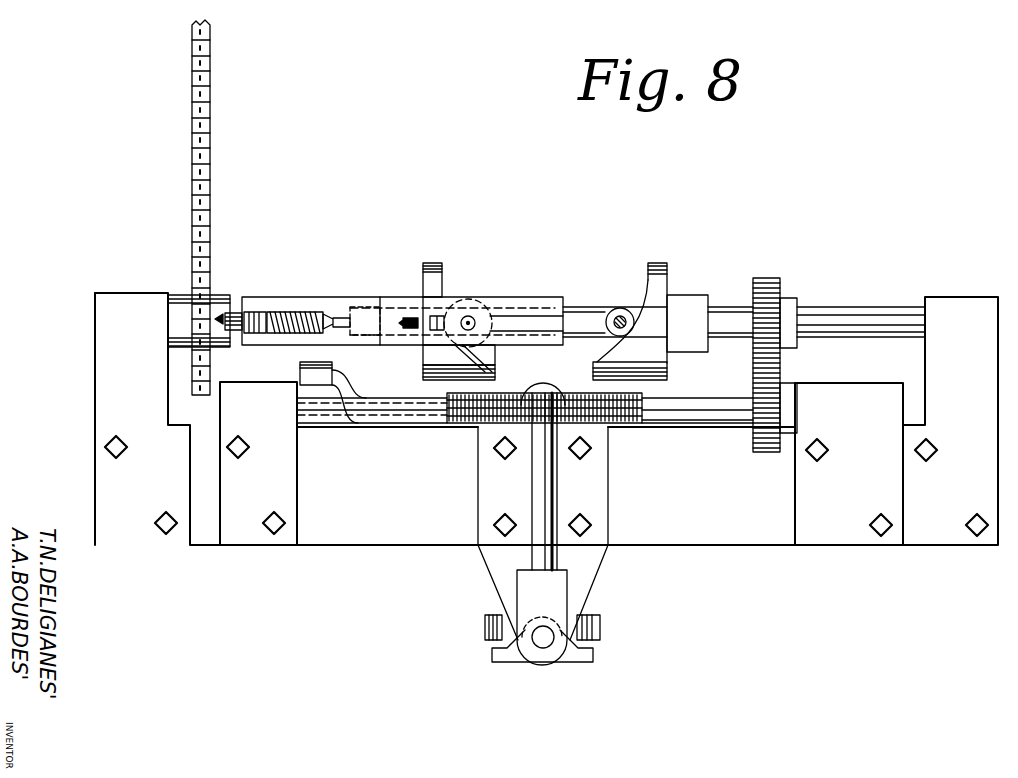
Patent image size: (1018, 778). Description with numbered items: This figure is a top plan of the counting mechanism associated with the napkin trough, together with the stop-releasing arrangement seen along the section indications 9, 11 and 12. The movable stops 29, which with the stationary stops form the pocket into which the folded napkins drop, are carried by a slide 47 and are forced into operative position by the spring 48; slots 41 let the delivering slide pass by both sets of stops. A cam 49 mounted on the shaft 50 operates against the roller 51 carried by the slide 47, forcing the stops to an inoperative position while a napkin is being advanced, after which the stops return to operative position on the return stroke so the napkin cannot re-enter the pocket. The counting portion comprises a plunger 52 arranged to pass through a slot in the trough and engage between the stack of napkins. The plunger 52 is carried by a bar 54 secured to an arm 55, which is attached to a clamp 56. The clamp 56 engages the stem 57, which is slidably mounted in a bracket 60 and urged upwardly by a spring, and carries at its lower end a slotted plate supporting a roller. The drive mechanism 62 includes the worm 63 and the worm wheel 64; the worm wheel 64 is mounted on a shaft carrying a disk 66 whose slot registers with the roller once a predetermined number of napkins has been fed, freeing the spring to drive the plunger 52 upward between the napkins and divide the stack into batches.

The spring 48 is at (296, 298).
The movable stops 29 is at (410, 318).
The slots 41 is at (441, 265).
The slide 47 is at (447, 322).
The roller 51 is at (623, 318).
The cam 49 is at (668, 270).
The shaft 50 is at (808, 318).
The plunger 52 is at (315, 372).
The bar 54 is at (420, 418).
The drive mechanism 62 is at (477, 408).
The worm 63 is at (560, 392).
The worm wheel 64 is at (635, 398).
The arm 55 is at (543, 472).
The bracket 60 is at (505, 567).
The clamp 56 is at (555, 592).
The disk 66 is at (602, 626).
The stem 57 is at (545, 640).
The section line 9- 9 is at (105, 390).
The section line 11- 11 is at (563, 353).
The section line 12- 12 is at (480, 207).